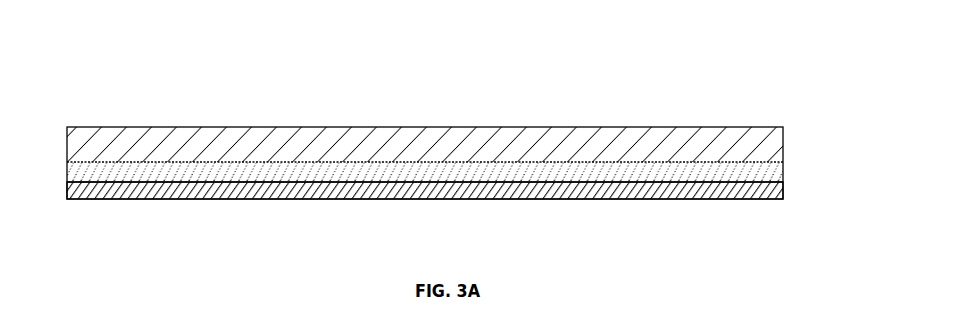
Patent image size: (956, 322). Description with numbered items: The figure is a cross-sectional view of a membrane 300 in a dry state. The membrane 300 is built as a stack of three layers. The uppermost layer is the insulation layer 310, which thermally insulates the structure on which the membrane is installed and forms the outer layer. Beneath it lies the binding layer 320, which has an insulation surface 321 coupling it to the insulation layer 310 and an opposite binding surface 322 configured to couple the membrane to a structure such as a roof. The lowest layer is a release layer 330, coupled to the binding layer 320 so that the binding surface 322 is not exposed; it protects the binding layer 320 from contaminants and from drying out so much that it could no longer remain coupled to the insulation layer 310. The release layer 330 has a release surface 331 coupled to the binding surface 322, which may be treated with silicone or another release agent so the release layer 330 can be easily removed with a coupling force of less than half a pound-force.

The membrane 300 is at (96, 77).
The insulation layer 310 is at (797, 123).
The binding layer 320 is at (795, 172).
The insulation surface 321 is at (784, 162).
The binding surface 322 is at (784, 183).
The release layer 330 is at (731, 208).
The release surface 331 is at (785, 187).